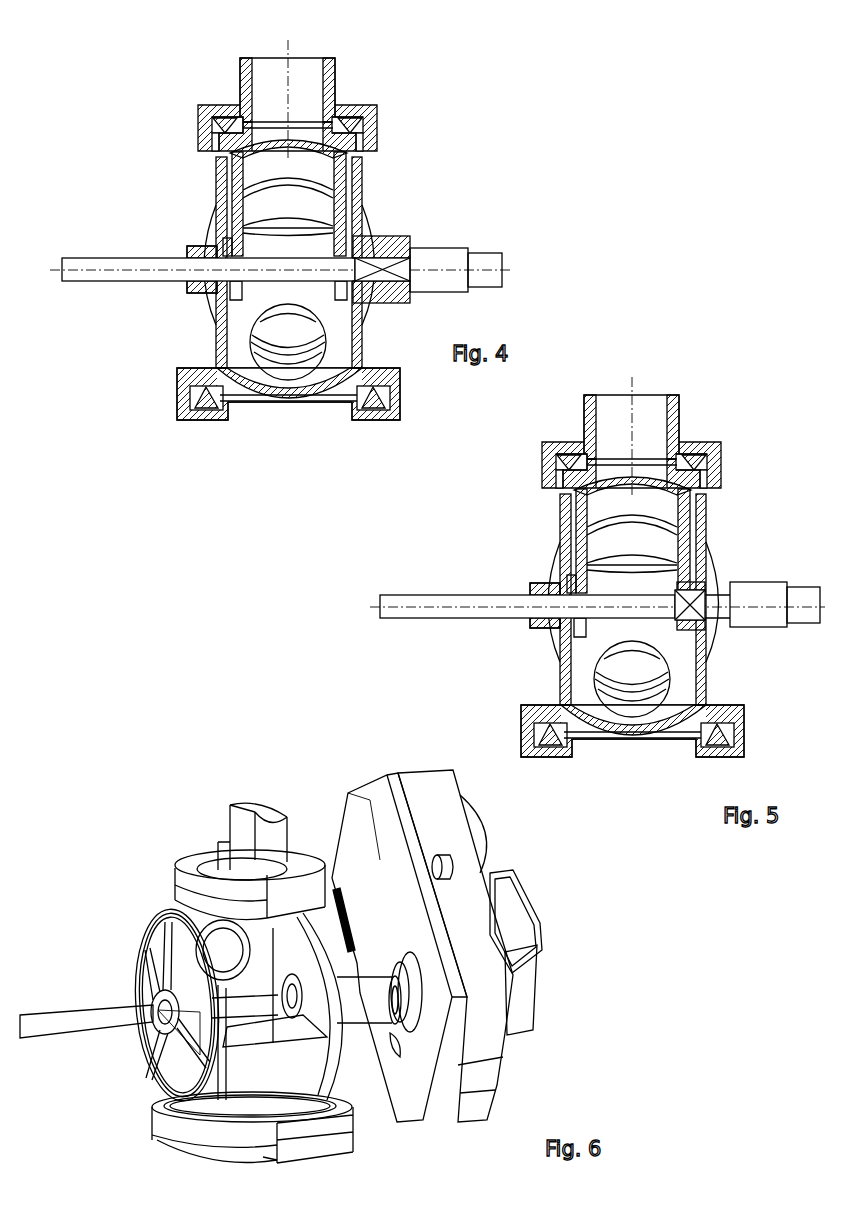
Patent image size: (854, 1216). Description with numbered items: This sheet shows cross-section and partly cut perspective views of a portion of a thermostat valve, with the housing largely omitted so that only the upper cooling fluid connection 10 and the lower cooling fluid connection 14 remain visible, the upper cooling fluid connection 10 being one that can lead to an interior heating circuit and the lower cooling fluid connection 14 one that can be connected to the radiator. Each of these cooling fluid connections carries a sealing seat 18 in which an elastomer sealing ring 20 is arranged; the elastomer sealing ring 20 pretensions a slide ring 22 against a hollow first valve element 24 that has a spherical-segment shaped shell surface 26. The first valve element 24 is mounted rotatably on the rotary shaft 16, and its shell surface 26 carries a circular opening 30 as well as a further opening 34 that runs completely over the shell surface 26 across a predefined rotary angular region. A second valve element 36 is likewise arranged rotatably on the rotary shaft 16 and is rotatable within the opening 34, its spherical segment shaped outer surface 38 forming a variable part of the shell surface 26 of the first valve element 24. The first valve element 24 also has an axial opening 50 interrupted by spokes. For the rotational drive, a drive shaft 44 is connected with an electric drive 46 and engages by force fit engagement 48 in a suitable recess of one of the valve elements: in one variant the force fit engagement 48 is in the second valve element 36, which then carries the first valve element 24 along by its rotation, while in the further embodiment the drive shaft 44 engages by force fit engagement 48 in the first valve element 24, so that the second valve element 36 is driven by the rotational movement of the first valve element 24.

In FIG. 4, the upper cooling fluid connection 10 is at (309, 63).
In FIG. 5, the upper cooling fluid connection 10 is at (631, 424).
In FIG. 6, the upper cooling fluid connection 10 is at (262, 808).
In FIG. 4, the lower cooling fluid connection 14 is at (302, 420).
In FIG. 5, the lower cooling fluid connection 14 is at (632, 756).
In FIG. 4, the rotary shaft 16 is at (133, 265).
In FIG. 5, the rotary shaft 16 is at (597, 578).
In FIG. 6, the rotary shaft 16 is at (97, 1018).
In FIG. 4, the sealing seat 18 is at (368, 107).
In FIG. 5, the sealing seat 18 is at (632, 596).
In FIG. 6, the sealing seat 18 is at (305, 850).
In FIG. 4, the elastomer sealing ring 20 is at (353, 127).
In FIG. 5, the elastomer sealing ring 20 is at (660, 568).
In FIG. 6, the elastomer sealing ring 20 is at (196, 862).
In FIG. 4, the slide ring 22 is at (333, 147).
In FIG. 5, the slide ring 22 is at (675, 598).
In FIG. 6, the slide ring 22 is at (178, 888).
In FIG. 4, the first valve element 24 is at (362, 345).
In FIG. 5, the first valve element 24 is at (648, 599).
In FIG. 4, the shell surface 26 is at (247, 390).
In FIG. 5, the shell surface 26 is at (633, 755).
In FIG. 4, the opening 30 is at (320, 372).
In FIG. 5, the opening 30 is at (585, 679).
In FIG. 6, the opening 34 is at (187, 1077).
In FIG. 4, the second valve element 36 is at (333, 192).
In FIG. 5, the second valve element 36 is at (665, 563).
In FIG. 6, the second valve element 36 is at (320, 1023).
In FIG. 4, the outer surface 38 is at (275, 125).
In FIG. 5, the outer surface 38 is at (606, 403).
In FIG. 6, the outer surface 38 is at (347, 1113).
In FIG. 4, the drive shaft 44 is at (445, 253).
In FIG. 5, the drive shaft 44 is at (762, 587).
In FIG. 6, the drive shaft 44 is at (367, 993).
In FIG. 6, the electric drive 46 is at (453, 828).
In FIG. 4, the force fit engagement 48 is at (390, 260).
In FIG. 5, the force fit engagement 48 is at (723, 618).
In FIG. 6, the axial opening 50 is at (153, 1113).